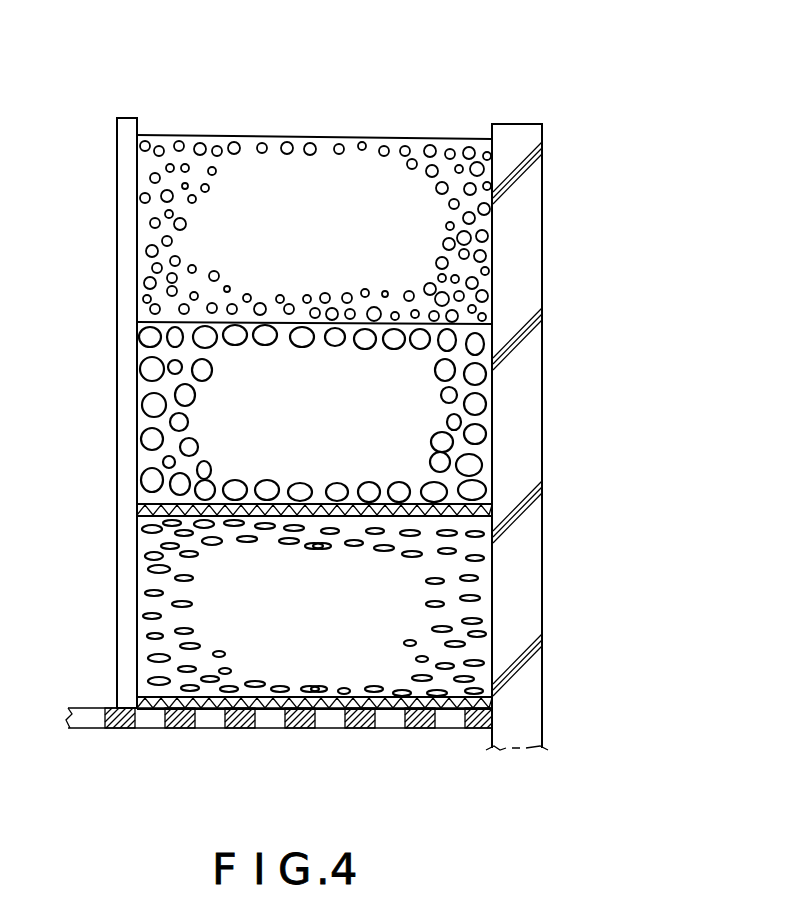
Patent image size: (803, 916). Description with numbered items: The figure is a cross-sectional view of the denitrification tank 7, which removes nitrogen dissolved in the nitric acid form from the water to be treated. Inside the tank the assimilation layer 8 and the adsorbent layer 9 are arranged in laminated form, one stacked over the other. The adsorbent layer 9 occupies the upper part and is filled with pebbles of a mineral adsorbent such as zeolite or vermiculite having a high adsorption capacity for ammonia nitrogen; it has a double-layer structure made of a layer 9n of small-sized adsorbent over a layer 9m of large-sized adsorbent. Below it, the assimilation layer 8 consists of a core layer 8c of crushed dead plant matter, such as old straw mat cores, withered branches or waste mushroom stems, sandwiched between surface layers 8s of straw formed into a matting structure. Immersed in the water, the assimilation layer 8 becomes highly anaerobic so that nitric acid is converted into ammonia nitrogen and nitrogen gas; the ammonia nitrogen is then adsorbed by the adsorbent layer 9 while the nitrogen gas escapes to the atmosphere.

The denitrification tank 7 is at (456, 120).
The adsorbent layer 9 is at (405, 321).
The small-sized adsorbent layer 9n is at (462, 234).
The large-sized adsorbent layer 9m is at (378, 408).
The assimilation layer 8 is at (406, 588).
The surface layer 8s is at (492, 500).
The core layer 8c is at (480, 588).